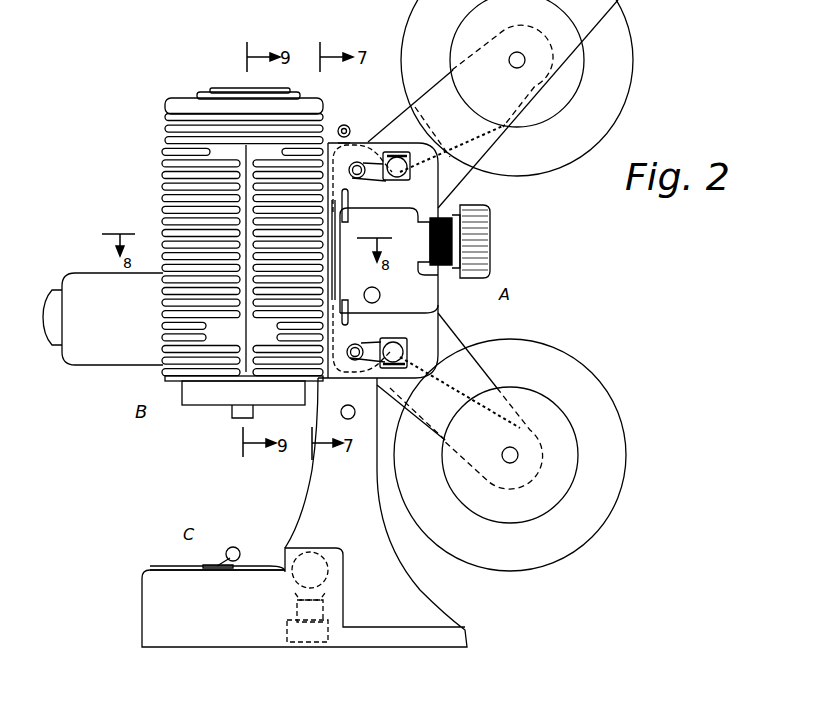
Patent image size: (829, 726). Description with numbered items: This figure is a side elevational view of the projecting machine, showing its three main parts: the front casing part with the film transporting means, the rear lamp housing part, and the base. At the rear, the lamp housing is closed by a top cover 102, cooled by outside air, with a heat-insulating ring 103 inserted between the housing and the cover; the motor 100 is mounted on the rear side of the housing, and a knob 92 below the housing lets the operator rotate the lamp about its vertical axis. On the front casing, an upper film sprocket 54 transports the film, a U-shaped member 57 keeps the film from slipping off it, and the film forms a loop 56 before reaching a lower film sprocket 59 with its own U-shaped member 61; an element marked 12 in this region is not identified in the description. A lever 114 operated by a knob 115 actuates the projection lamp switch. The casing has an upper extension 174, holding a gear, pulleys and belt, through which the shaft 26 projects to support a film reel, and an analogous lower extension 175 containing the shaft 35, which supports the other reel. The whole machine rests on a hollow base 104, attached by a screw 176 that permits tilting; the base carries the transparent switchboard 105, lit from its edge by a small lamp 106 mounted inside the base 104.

The top cover 102 is at (178, 102).
The ring 103 is at (170, 134).
The motor 100 is at (113, 355).
The knob 92 is at (233, 420).
The knob 115 is at (344, 124).
The lever 114 is at (350, 137).
The loop 56 is at (340, 387).
The U-shaped member 57 is at (380, 179).
The film sprocket 54 is at (405, 170).
The extension 174 is at (452, 138).
The shaft 26 is at (515, 68).
The U-shaped member 61 is at (377, 343).
The film gate 12 is at (337, 271).
The film sprocket 59 is at (402, 356).
The screw 176 is at (351, 406).
The extension 175 is at (460, 392).
The shaft 35 is at (503, 452).
The hollow base 104 is at (315, 515).
The switchboard 105 is at (150, 566).
The small lamp 106 is at (320, 575).